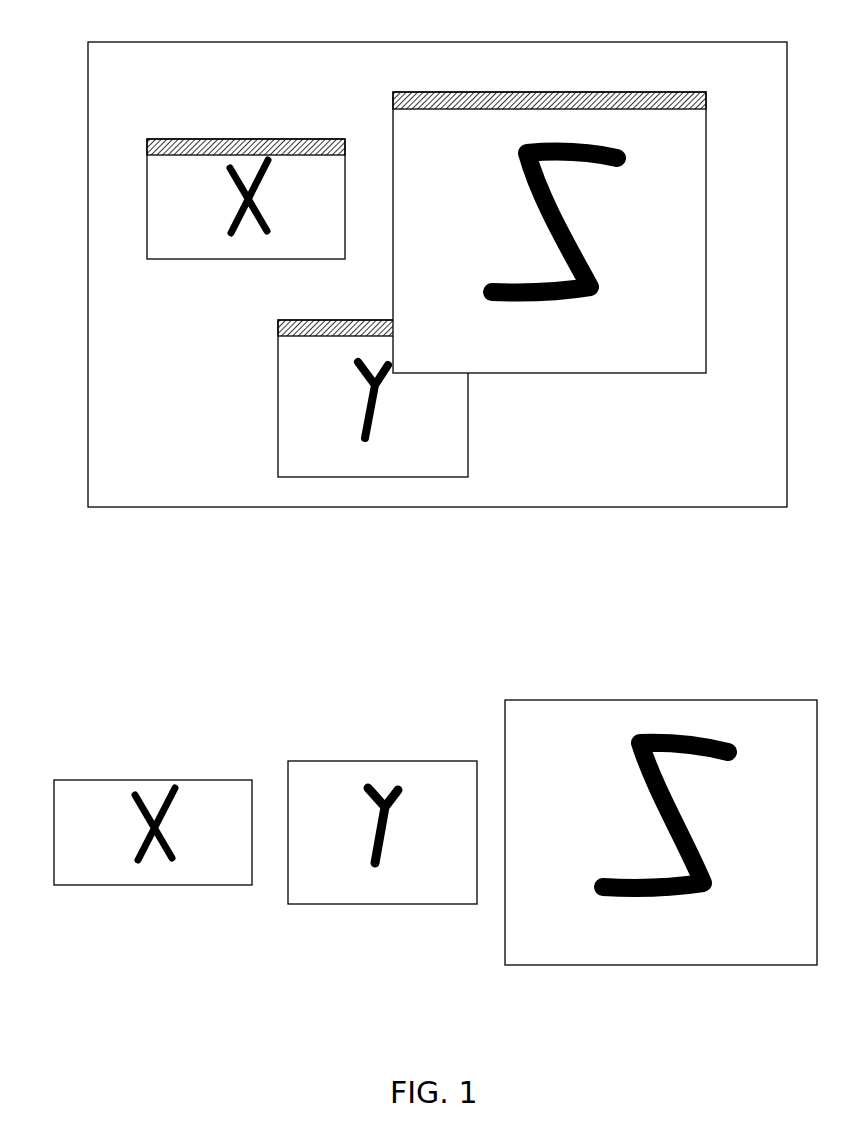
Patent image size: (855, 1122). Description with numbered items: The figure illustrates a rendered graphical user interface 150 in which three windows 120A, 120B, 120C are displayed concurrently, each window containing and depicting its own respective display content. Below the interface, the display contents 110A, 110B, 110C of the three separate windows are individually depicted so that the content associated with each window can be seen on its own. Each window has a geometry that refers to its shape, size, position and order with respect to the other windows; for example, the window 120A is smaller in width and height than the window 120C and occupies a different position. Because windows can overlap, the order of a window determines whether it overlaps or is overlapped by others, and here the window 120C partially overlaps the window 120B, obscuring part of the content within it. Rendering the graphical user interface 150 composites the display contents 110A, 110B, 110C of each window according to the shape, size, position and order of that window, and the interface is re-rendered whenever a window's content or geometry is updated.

The rendered graphical user interface 150 is at (130, 35).
The window 120A is at (147, 180).
The window 120B is at (337, 478).
The window 120C is at (597, 373).
The display contents 110A is at (88, 782).
The display contents 110B is at (313, 761).
The display contents 110C is at (530, 700).